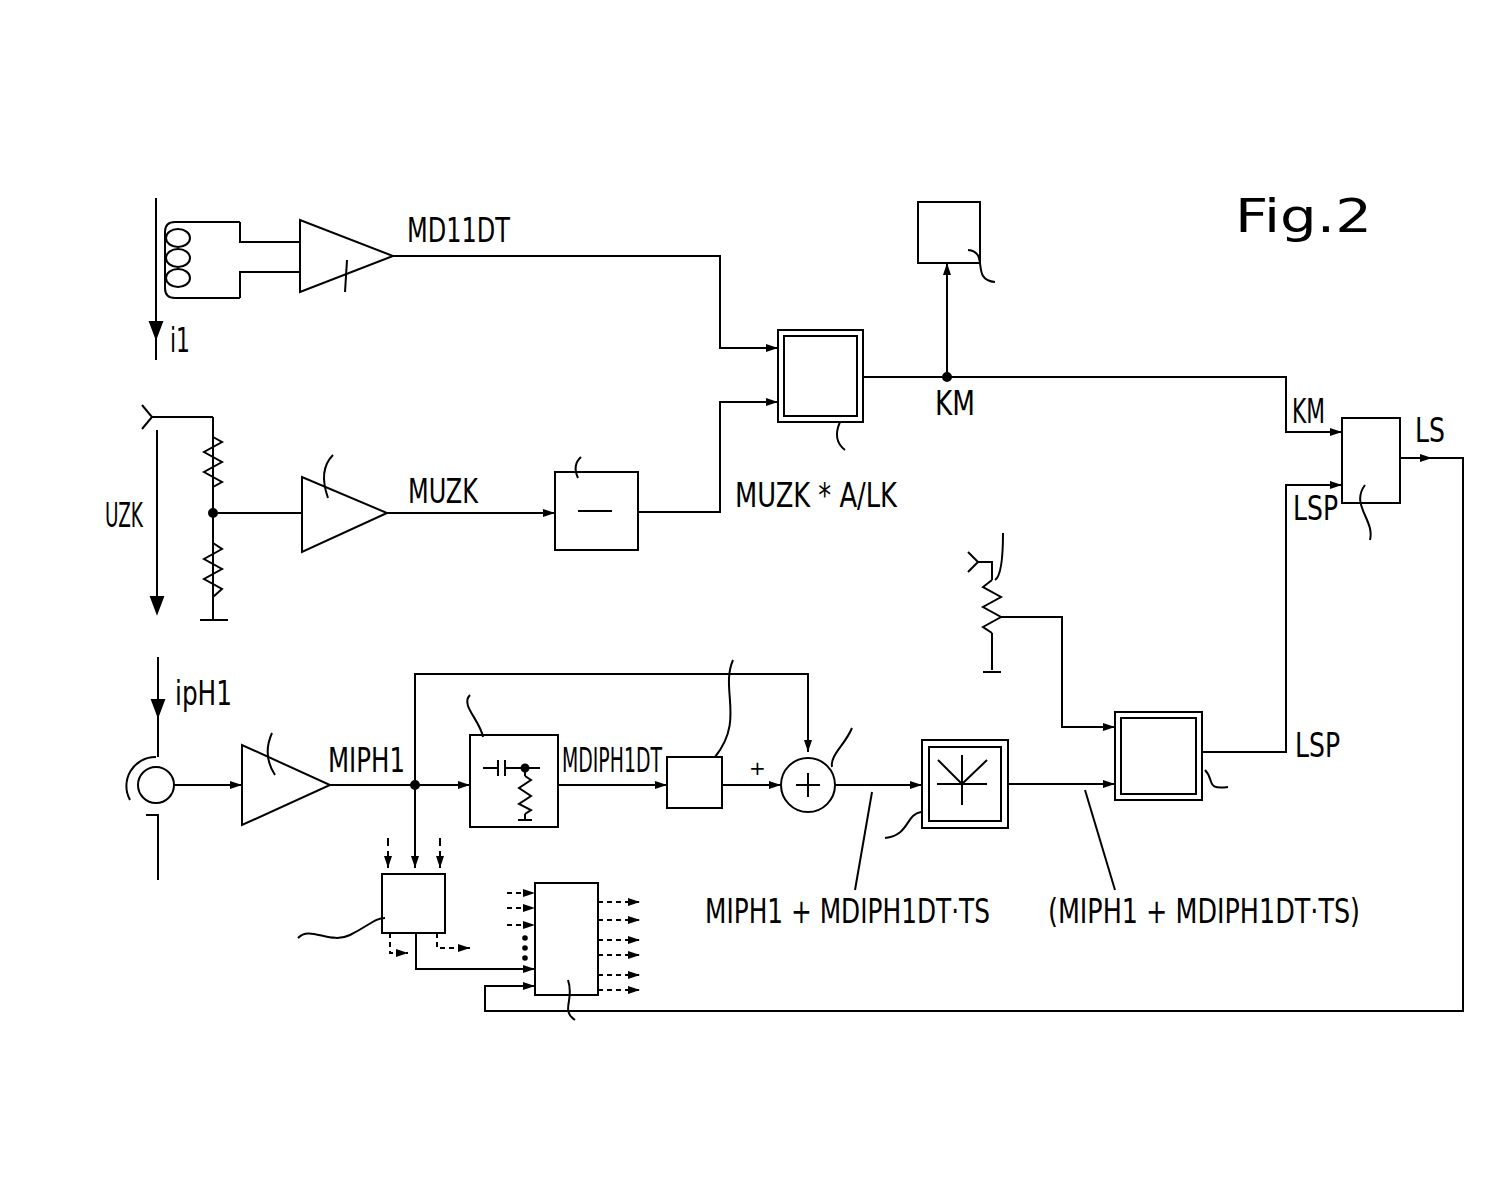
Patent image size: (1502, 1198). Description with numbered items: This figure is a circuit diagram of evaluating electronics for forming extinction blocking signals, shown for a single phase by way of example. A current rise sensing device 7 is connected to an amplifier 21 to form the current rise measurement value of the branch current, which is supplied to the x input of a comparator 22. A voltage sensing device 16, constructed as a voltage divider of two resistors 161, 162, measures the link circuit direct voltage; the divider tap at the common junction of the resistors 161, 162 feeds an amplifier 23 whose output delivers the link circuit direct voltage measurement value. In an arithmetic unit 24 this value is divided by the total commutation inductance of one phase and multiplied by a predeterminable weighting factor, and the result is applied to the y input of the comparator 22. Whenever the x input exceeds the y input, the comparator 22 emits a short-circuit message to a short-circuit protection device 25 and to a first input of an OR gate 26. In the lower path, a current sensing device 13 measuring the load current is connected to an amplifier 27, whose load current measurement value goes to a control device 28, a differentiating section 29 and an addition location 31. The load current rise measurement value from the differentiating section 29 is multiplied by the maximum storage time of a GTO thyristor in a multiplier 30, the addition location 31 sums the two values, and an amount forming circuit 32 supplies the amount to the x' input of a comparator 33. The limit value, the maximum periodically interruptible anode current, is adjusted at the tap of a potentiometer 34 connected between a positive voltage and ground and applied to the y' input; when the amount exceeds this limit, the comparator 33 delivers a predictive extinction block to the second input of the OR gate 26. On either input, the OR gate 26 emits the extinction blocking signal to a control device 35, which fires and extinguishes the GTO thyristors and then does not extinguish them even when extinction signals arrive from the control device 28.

The current rise sensing device 7 is at (175, 236).
The amplifier 21 is at (337, 253).
The voltage sensing device 16 is at (260, 426).
The resistor 161 is at (215, 462).
The resistor 162 is at (218, 566).
The amplifier 23 is at (340, 514).
The arithmetic unit 24 is at (620, 537).
The comparator 22 is at (817, 347).
The short-circuit protection device 25 is at (962, 230).
The OR gate 26 is at (1373, 425).
The potentiometer 34 is at (983, 598).
The current sensing device 13 is at (161, 818).
The amplifier 27 is at (272, 788).
The differentiating section 29 is at (503, 805).
The multiplier 30 is at (684, 806).
The addition location 31 is at (803, 807).
The amount forming circuit 32 is at (950, 755).
The comparator 33 is at (1170, 738).
The control device 28 is at (392, 910).
The control device 35 is at (577, 905).